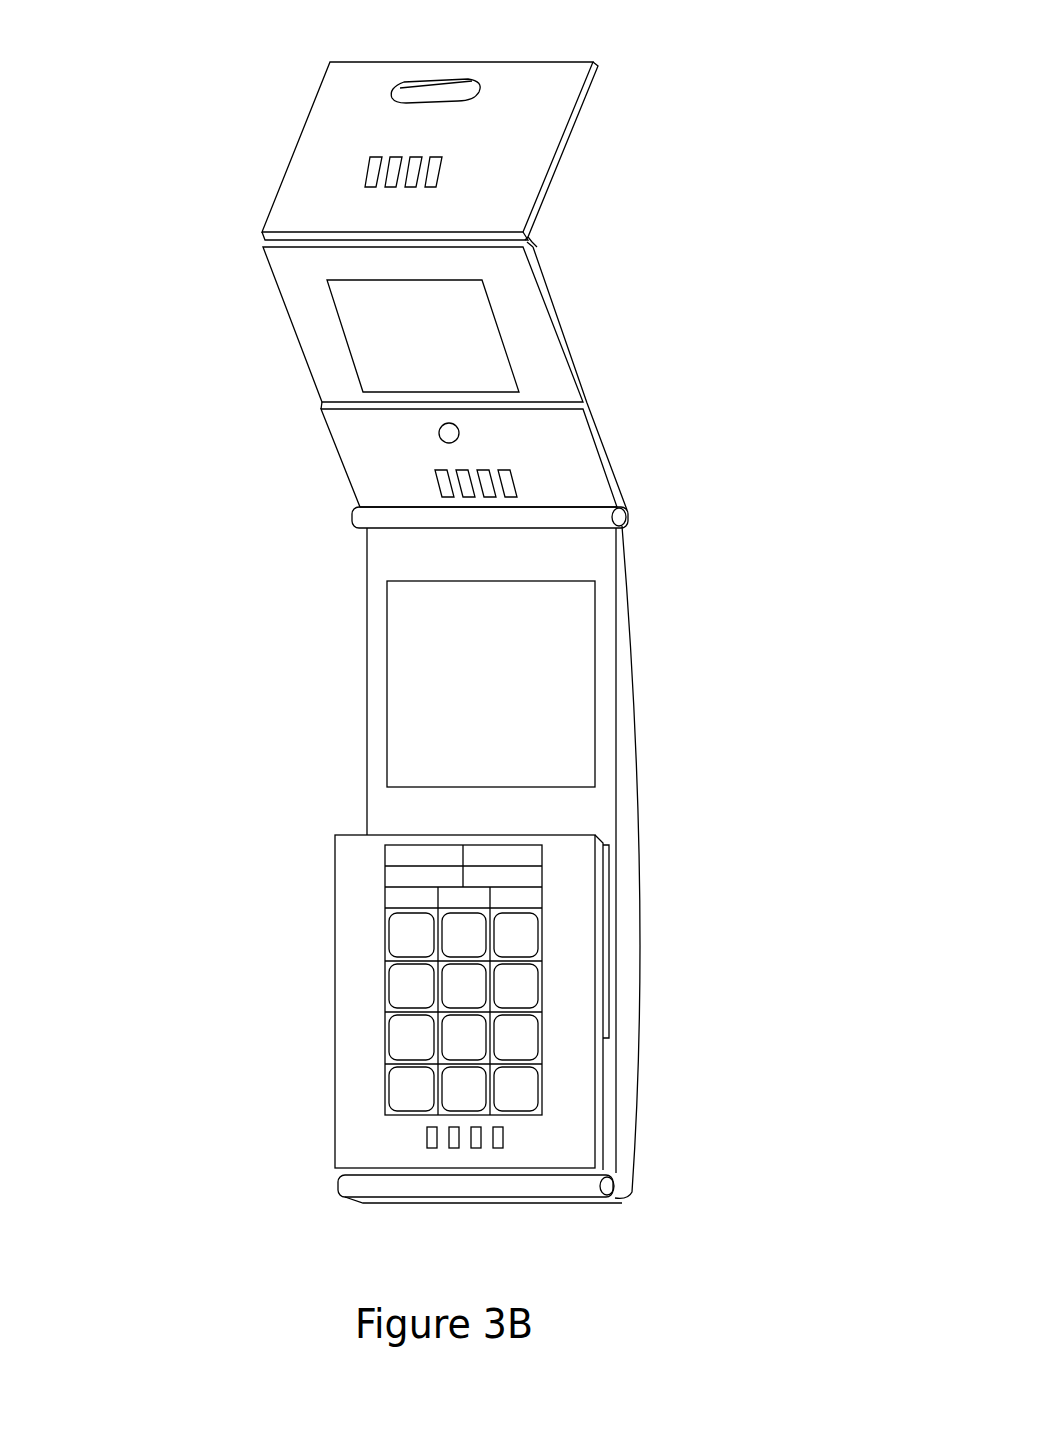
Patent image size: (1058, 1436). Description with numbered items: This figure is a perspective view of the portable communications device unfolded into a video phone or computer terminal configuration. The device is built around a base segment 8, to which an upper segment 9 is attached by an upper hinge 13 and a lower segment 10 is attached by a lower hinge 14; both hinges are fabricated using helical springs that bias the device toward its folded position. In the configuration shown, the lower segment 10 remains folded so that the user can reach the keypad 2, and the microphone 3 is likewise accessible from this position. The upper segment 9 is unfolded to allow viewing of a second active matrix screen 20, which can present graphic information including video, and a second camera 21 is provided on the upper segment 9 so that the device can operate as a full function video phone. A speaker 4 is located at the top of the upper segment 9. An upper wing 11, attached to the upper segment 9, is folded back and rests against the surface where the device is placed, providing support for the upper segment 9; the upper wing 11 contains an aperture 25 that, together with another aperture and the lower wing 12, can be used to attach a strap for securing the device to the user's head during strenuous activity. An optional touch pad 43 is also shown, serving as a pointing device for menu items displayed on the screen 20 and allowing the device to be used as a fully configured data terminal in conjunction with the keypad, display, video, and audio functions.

The keypad 2 is at (395, 933).
The microphone 3 is at (427, 1143).
The speaker 4 is at (470, 487).
The base segment 8 is at (607, 672).
The upper segment 9 is at (573, 465).
The lower segment 10 is at (583, 1090).
The upper wing 11 is at (573, 89).
The lower wing 12 is at (605, 902).
The upper hinge 13 is at (627, 517).
The lower hinge 14 is at (532, 1183).
The second active matrix screen 20 is at (357, 318).
The second camera 21 is at (440, 436).
The aperture 25 is at (438, 90).
The optional touch pad 43 is at (407, 650).